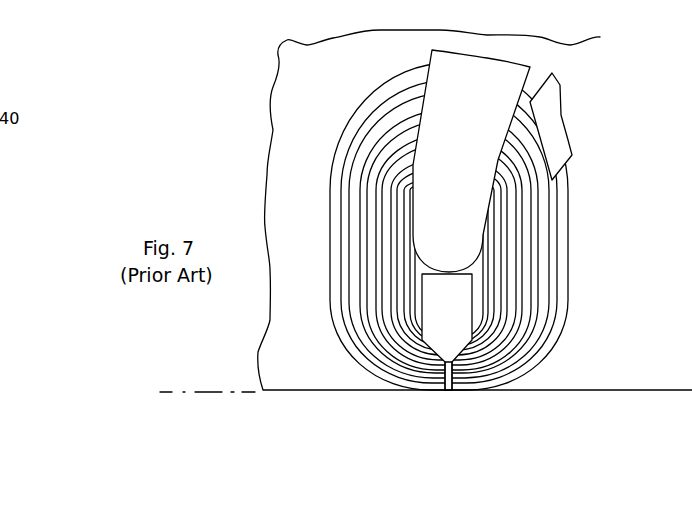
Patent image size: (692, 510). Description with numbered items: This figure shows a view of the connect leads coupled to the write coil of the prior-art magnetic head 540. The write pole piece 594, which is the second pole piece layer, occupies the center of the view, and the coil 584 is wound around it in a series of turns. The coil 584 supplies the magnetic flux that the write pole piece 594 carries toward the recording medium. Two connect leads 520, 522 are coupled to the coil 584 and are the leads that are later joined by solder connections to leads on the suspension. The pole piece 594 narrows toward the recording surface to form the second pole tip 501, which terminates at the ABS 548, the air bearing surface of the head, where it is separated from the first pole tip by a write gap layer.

The magnetic head 540 is at (580, 212).
The coil 584 is at (543, 294).
The connect lead 520 is at (472, 160).
The connect lead 522 is at (562, 117).
The second pole piece layer 594 is at (458, 320).
The second pole tip 501 is at (443, 393).
The ABS 548 is at (207, 392).